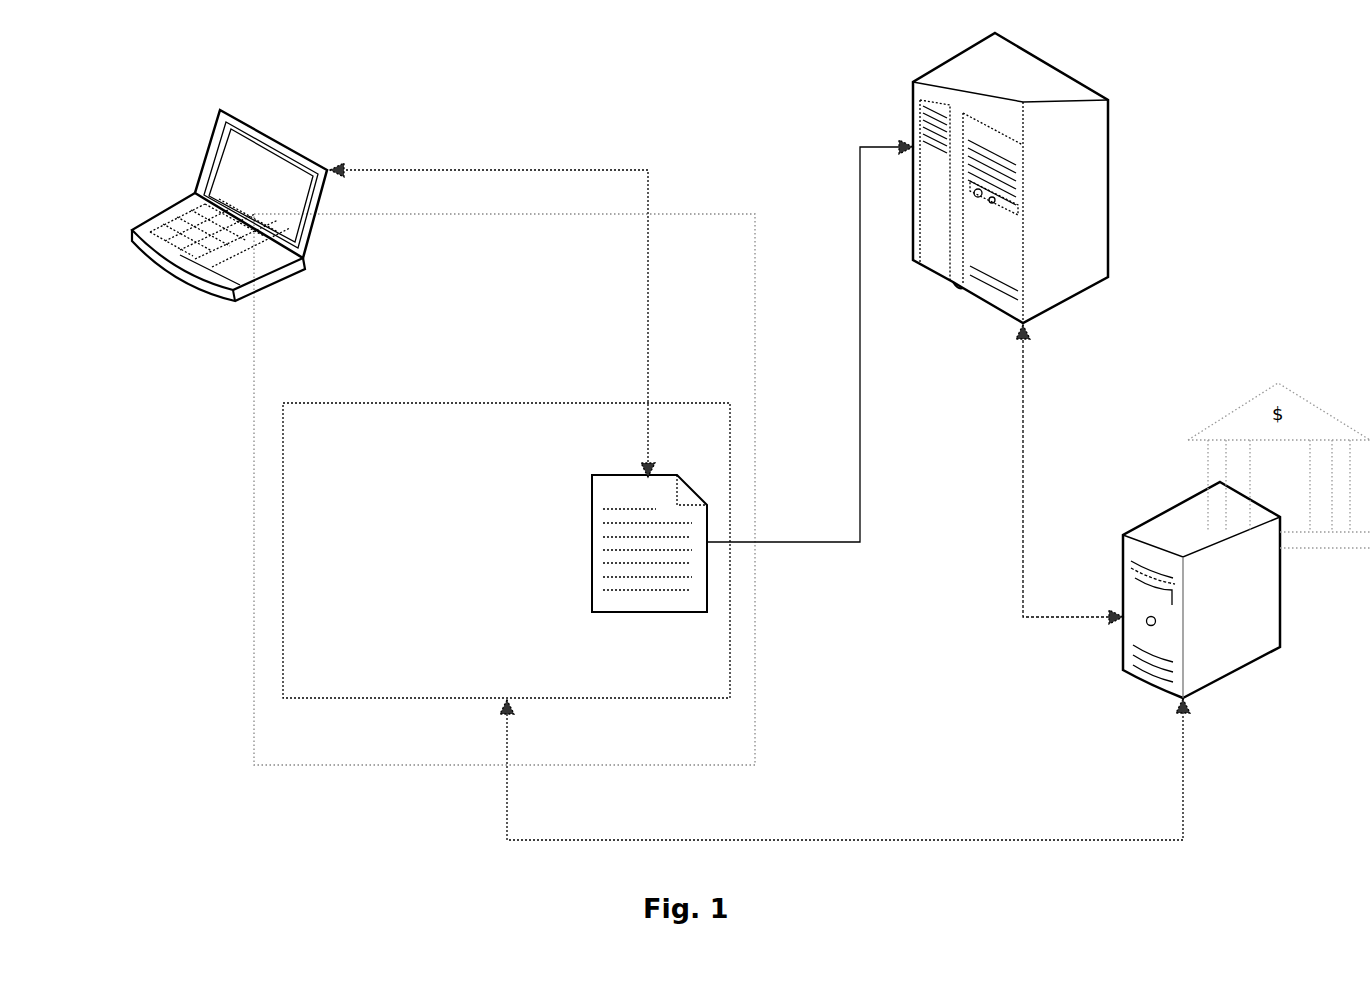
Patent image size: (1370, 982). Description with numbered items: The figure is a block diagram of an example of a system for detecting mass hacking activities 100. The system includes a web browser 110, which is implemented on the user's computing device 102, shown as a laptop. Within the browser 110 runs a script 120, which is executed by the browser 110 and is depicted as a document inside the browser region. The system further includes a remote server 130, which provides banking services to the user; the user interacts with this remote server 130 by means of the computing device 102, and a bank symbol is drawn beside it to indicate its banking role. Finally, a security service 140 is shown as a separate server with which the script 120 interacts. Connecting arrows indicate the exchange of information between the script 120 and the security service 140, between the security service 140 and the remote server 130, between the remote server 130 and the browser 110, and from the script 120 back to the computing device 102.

The system for detecting mass hacking activities 100 is at (661, 23).
The user's computing device 102 is at (208, 93).
The web browser 110 is at (320, 393).
The script 120 is at (628, 464).
The remote server 130 is at (1161, 508).
The security service 140 is at (927, 63).